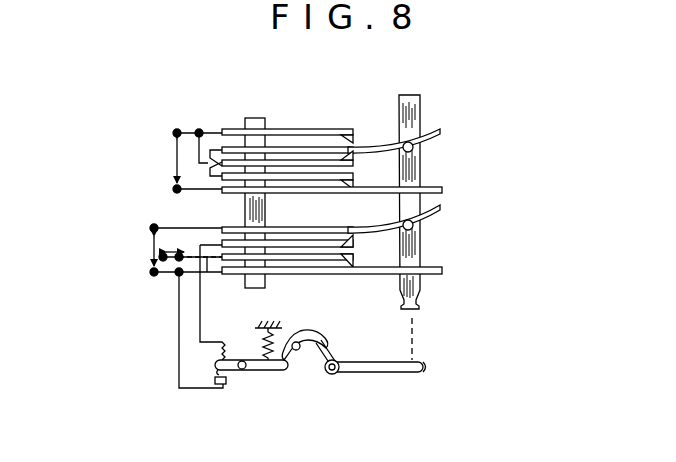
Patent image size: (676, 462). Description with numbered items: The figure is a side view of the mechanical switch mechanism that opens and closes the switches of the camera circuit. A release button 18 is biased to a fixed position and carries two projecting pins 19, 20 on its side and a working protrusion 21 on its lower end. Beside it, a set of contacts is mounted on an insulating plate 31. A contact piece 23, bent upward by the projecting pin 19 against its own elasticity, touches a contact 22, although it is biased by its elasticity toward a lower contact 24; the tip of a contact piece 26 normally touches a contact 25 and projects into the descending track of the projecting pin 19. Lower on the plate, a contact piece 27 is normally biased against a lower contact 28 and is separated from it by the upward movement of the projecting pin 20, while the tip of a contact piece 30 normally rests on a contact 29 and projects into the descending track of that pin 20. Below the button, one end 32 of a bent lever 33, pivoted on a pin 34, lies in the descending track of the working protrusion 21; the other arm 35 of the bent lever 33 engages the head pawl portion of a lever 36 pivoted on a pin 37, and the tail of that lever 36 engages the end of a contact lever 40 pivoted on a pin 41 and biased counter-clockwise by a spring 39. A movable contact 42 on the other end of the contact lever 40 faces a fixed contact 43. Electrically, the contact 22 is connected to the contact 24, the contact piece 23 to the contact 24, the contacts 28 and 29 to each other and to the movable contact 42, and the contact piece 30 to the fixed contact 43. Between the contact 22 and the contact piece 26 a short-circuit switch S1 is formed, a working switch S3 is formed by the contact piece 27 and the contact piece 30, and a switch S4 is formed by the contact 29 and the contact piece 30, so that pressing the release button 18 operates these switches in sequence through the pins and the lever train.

The release button 18 is at (411, 104).
The projecting pin 19 is at (414, 148).
The projecting pin 20 is at (414, 226).
The working protrusion 21 is at (417, 305).
The contact 22 is at (313, 130).
The contact piece 23 is at (440, 130).
The lower contact 24 is at (328, 160).
The contact 25 is at (286, 160).
The contact piece 26 is at (442, 190).
The contact piece 27 is at (440, 208).
The lower contact 28 is at (282, 242).
The contact 29 is at (322, 260).
The contact piece 30 is at (442, 272).
The insulating plate 31 is at (248, 118).
The one end of bent lever 32 is at (425, 365).
The bent lever 33 is at (388, 372).
The pin 34 is at (335, 374).
The other arm of bent lever 35 is at (324, 352).
The lever 36 is at (306, 335).
The pin 37 is at (297, 356).
The spring 39 is at (272, 342).
The contact lever 40 is at (258, 372).
The pin 41 is at (242, 360).
The movable contact 42 is at (212, 372).
The fixed contact 43 is at (226, 386).
The short-circuit switch S1 is at (176, 157).
The working switch S3 is at (152, 249).
The switch S4 is at (172, 245).